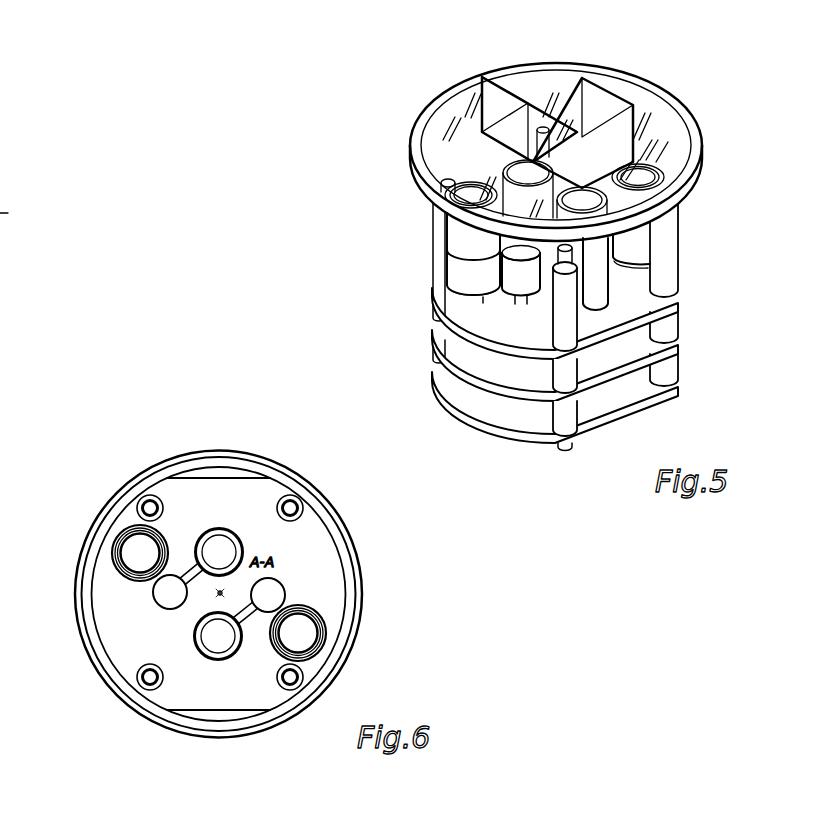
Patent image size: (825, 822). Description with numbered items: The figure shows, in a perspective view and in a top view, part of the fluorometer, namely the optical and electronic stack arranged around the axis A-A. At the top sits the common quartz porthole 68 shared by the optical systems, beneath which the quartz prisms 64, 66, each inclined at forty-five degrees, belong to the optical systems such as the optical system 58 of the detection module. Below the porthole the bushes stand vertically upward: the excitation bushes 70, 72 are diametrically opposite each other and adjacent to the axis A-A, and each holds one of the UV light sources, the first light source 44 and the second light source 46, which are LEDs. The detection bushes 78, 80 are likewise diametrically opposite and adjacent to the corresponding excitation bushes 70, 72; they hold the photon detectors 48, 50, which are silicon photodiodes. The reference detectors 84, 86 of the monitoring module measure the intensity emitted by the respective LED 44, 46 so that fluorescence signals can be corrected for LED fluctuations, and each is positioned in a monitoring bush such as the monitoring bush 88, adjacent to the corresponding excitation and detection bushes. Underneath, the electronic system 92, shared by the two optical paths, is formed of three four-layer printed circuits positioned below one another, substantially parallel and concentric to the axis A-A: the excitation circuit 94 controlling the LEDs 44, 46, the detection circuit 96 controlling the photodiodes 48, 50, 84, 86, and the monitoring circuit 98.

In FIG. 6, the first light source 44 is at (219, 546).
In FIG. 6, the second light source 46 is at (233, 636).
In FIG. 6, the photon detector 48 is at (138, 558).
In FIG. 6, the photon detector 50 is at (305, 640).
In FIG. 6, the optical system 58 is at (15, 199).
In FIG. 5, the quartz prism 64 is at (466, 90).
In FIG. 5, the quartz prism 66 is at (597, 110).
In FIG. 5, the common quartz porthole 68 is at (453, 127).
In FIG. 5, the excitation bush 70 is at (500, 157).
In FIG. 6, the excitation bush 70 is at (207, 548).
In FIG. 5, the excitation bush 72 is at (592, 277).
In FIG. 6, the excitation bush 72 is at (227, 640).
In FIG. 5, the detection bush 78 is at (453, 238).
In FIG. 6, the detection bush 78 is at (123, 532).
In FIG. 5, the detection bush 80 is at (640, 247).
In FIG. 6, the detection bush 80 is at (318, 605).
In FIG. 6, the reference detector 84 is at (165, 595).
In FIG. 6, the reference detector 86 is at (278, 590).
In FIG. 5, the monitoring bush 88 is at (517, 278).
In FIG. 5, the electronic system 92 is at (697, 388).
In FIG. 5, the excitation circuit 94 is at (675, 348).
In FIG. 5, the detection circuit 96 is at (453, 308).
In FIG. 5, the monitoring circuit 98 is at (653, 400).